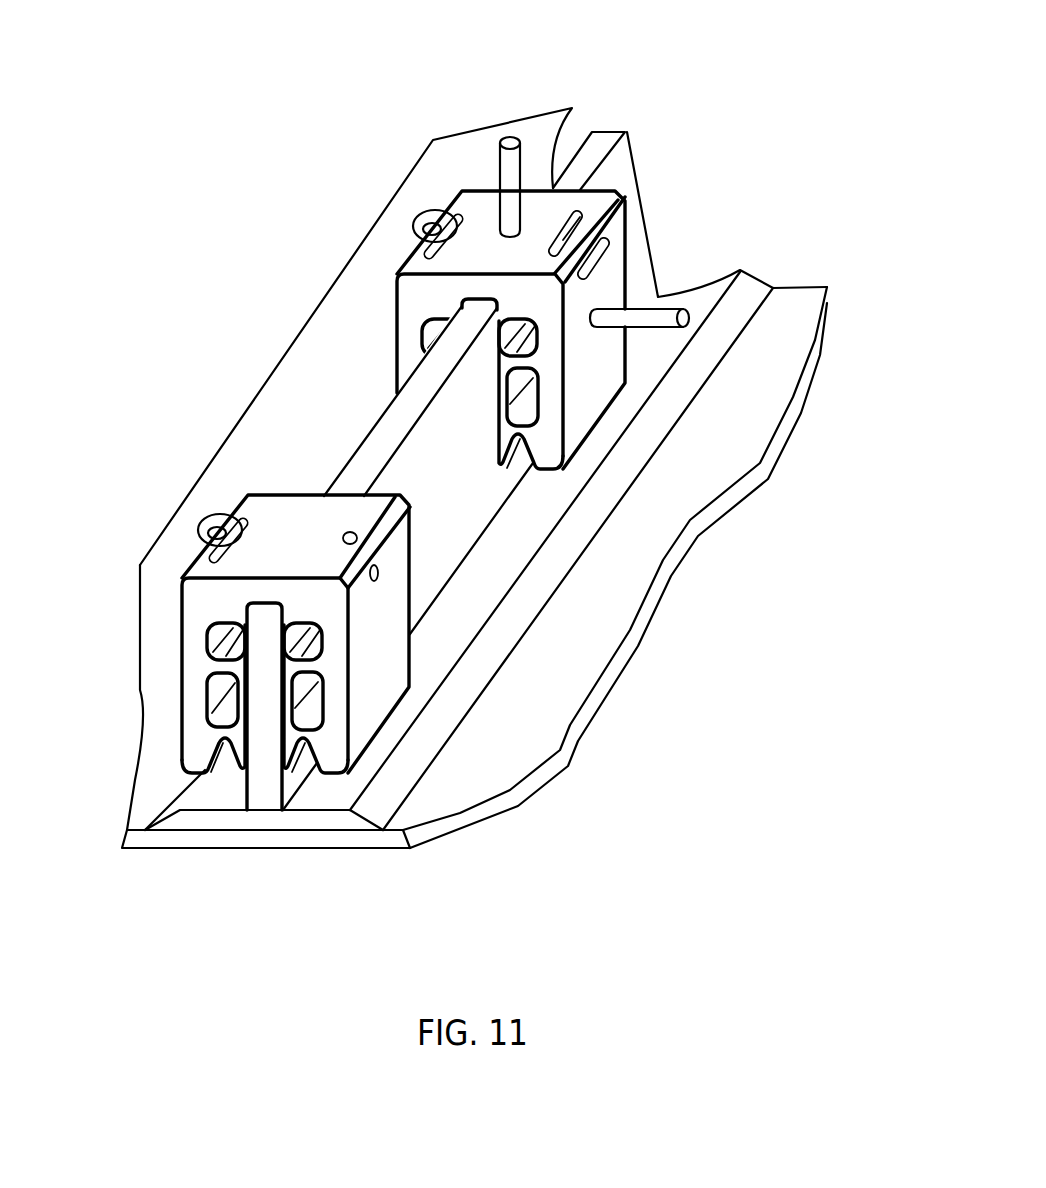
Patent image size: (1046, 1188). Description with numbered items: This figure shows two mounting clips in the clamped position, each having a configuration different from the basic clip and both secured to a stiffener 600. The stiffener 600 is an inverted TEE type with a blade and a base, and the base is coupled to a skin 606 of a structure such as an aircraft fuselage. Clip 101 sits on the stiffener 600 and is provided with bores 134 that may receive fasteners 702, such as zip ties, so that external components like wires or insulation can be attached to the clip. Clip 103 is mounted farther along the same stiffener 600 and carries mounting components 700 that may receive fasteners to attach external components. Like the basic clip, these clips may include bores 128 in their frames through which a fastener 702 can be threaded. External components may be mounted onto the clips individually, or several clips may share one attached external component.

The clip 101 is at (240, 488).
The clip 103 is at (386, 307).
The bores 128 is at (625, 132).
The bores 134 is at (360, 537).
The stiffener 600 is at (470, 505).
The skin 606 is at (463, 762).
The mounting components 700 is at (507, 170).
The fastener 702 is at (430, 209).